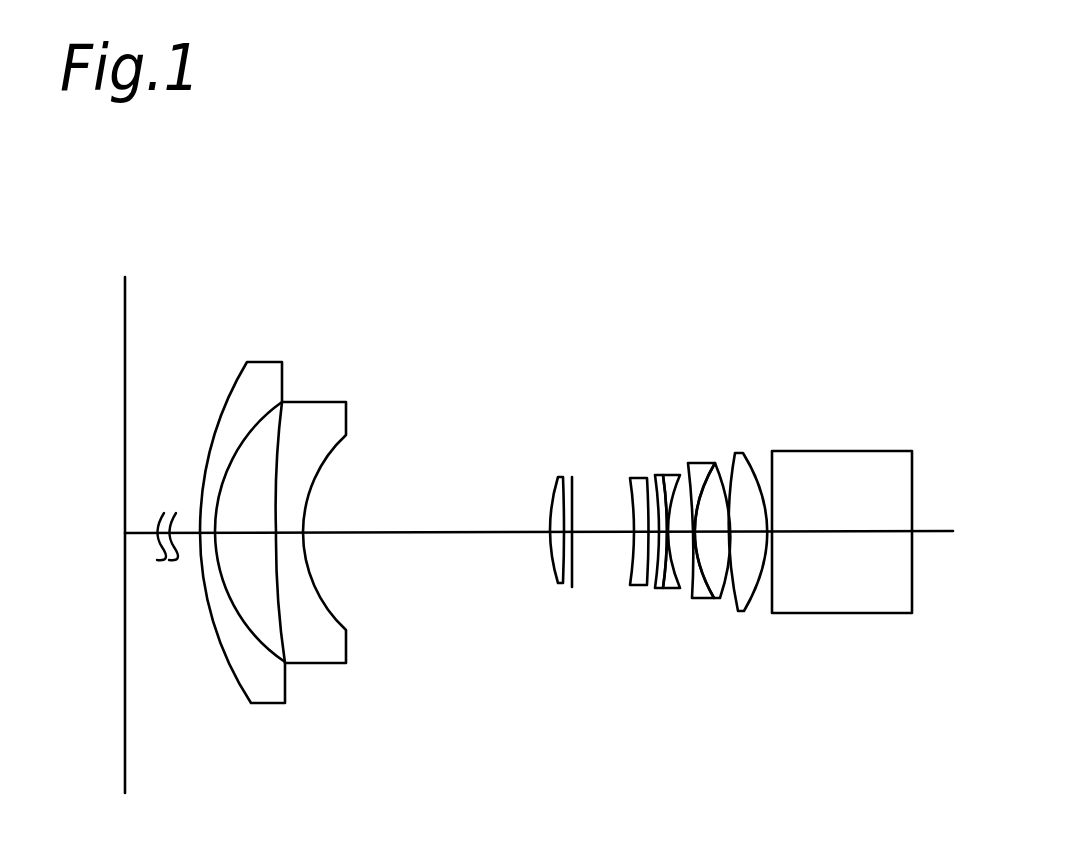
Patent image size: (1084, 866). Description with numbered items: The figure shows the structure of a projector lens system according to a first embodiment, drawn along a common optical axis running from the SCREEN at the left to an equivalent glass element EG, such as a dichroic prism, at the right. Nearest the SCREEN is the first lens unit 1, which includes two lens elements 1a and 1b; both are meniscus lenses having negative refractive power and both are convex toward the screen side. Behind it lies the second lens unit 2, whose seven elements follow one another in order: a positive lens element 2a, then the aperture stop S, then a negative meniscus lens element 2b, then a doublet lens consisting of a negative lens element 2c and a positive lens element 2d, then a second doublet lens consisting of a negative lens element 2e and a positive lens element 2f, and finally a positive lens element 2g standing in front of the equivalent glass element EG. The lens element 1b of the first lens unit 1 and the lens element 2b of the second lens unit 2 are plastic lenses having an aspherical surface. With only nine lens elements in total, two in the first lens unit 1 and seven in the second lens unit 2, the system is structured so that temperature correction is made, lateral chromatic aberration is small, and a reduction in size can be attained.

The first lens unit 1 is at (287, 564).
The lens element 1a is at (263, 368).
The lens element 1b is at (316, 413).
The second lens unit 2 is at (655, 577).
The positive lens element 2a is at (560, 478).
The negative meniscus lens element 2b is at (630, 478).
The negative lens element 2c is at (662, 475).
The positive lens element 2d is at (673, 475).
The negative lens element 2e is at (698, 462).
The positive lens element 2f is at (715, 462).
The positive lens element 2g is at (740, 453).
The aperture stop S is at (572, 587).
The equivalent glass element EG is at (840, 600).
The screen SCREEN is at (125, 307).